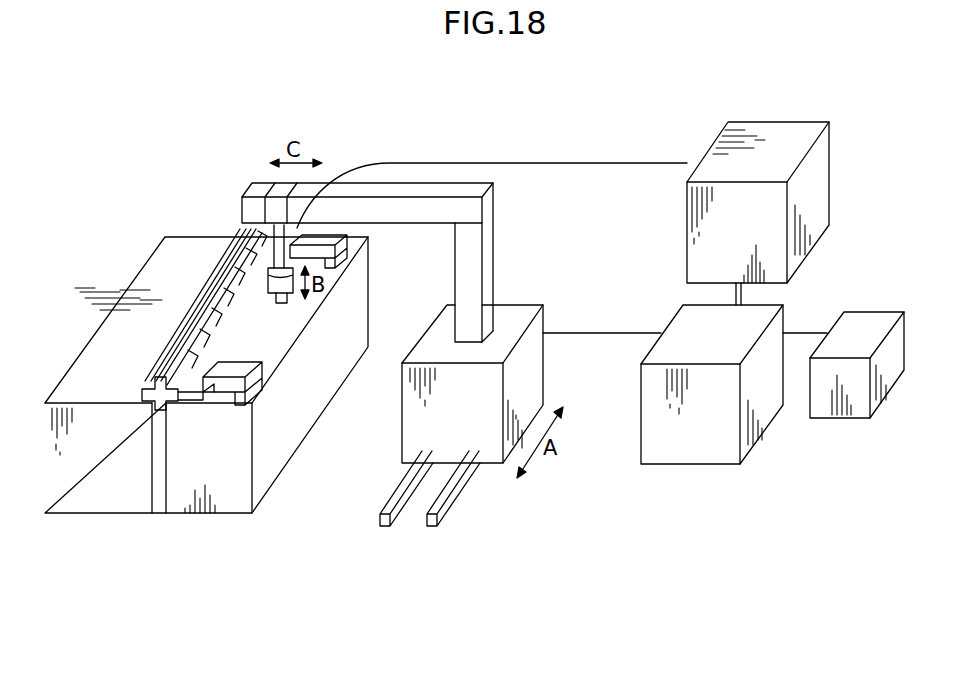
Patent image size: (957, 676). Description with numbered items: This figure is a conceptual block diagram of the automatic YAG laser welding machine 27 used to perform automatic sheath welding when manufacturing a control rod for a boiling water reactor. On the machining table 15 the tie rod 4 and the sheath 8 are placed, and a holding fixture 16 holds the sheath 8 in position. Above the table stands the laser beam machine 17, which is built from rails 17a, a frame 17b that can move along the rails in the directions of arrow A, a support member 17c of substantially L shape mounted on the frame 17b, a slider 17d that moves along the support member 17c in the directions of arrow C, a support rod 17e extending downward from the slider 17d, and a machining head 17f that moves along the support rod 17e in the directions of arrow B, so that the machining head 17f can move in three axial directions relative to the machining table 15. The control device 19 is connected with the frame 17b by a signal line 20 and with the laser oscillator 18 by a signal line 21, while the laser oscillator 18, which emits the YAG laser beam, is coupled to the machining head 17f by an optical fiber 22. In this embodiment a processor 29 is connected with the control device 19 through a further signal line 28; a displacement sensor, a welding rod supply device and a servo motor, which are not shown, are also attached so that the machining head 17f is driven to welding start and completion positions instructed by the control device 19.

The tie rod 4 is at (170, 357).
The sheath 8 is at (195, 392).
The machining table 15 is at (122, 502).
The holding fixture 16 is at (349, 243).
The laser beam machine 17 is at (408, 338).
The rails 17a is at (455, 499).
The frame 17b is at (544, 372).
The support member 17c is at (494, 206).
The slider 17d is at (278, 188).
The support rod 17e is at (252, 233).
The machining head 17f is at (291, 296).
The laser oscillator 18 is at (687, 216).
The control device 19 is at (685, 452).
The signal line 20 is at (583, 333).
The signal line 21 is at (735, 294).
The optical fiber 22 is at (577, 163).
The automatic YAG laser welding machine 27 is at (408, 291).
The signal line 28 is at (808, 333).
The processor 29 is at (819, 413).